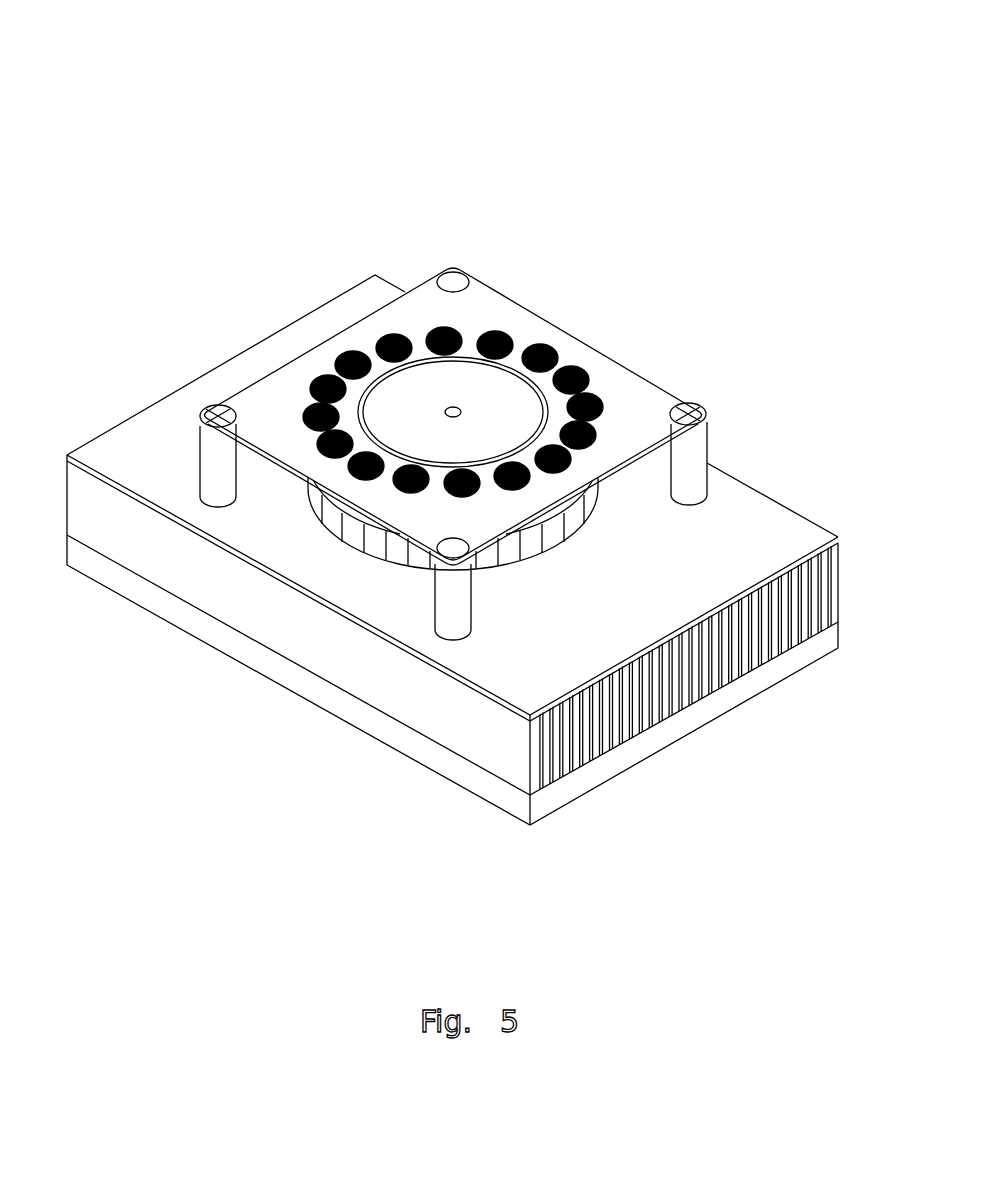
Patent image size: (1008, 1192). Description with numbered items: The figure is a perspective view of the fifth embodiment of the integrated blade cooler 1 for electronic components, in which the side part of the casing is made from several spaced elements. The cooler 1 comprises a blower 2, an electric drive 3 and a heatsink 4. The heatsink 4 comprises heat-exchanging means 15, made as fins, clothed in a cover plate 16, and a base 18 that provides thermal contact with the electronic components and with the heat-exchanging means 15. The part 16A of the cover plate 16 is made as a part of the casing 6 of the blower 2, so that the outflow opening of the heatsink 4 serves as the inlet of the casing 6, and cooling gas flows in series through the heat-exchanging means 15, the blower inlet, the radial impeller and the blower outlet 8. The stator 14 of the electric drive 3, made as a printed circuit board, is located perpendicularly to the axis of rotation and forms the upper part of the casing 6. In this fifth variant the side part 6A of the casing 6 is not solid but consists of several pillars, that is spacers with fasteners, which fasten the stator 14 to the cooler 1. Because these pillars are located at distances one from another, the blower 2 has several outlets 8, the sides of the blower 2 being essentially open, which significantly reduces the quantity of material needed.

The integrated blade cooler 1 is at (258, 132).
The blower 2 is at (325, 547).
The electric drive 3 is at (588, 332).
The heatsink 4 is at (205, 582).
The casing 6 is at (630, 395).
The side part of the casing 6A is at (205, 452).
The outlet 8 is at (385, 583).
The stator 14 is at (342, 353).
The heat-exchanging means 15 is at (713, 643).
The cover plate 16 is at (740, 548).
The part of the cover plate 16A is at (627, 492).
The base 18 is at (655, 738).